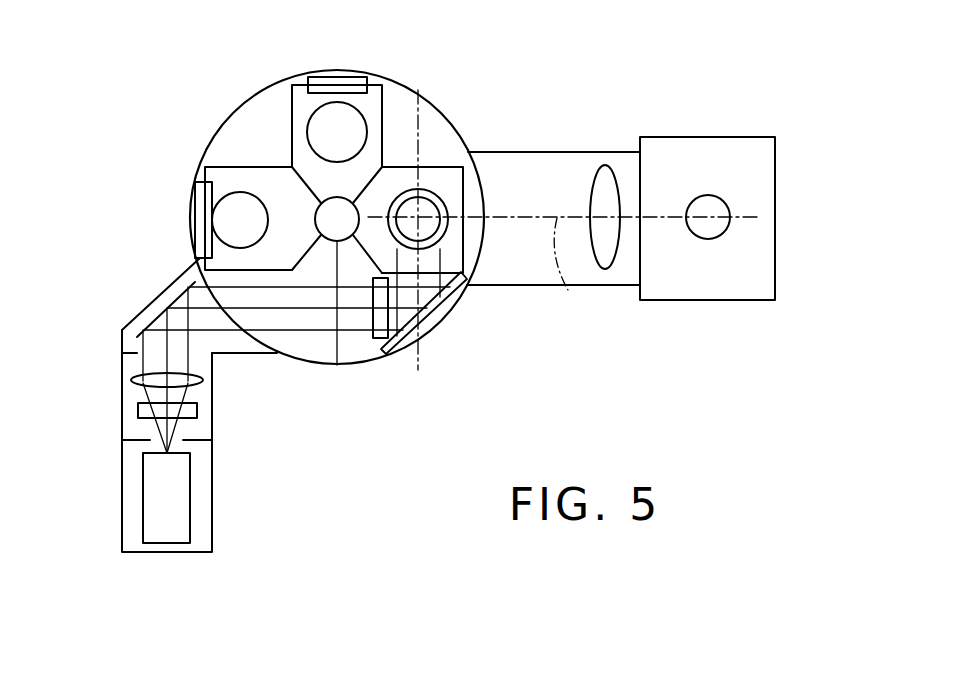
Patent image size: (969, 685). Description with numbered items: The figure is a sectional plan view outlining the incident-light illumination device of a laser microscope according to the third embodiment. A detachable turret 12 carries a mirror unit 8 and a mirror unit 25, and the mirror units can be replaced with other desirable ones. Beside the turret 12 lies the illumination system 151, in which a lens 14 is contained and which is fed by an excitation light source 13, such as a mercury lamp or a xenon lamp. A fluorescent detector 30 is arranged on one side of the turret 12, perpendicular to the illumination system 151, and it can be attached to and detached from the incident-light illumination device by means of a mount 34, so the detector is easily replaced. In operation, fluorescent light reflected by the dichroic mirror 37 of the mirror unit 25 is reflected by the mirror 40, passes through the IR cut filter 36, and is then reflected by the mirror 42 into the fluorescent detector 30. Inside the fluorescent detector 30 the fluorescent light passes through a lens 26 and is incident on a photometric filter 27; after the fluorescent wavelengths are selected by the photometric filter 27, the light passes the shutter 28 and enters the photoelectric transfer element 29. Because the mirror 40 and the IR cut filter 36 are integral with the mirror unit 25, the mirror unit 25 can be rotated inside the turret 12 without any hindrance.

The turret 12 is at (220, 123).
The mirror unit 8 is at (389, 120).
The dichroic mirror 37 is at (428, 207).
The illumination system 151 is at (562, 273).
The lens 14 is at (605, 267).
The excitation light source 13 is at (718, 235).
The mirror unit 25 is at (456, 244).
The mirror 40 is at (415, 320).
The IR cut filter 36 is at (377, 340).
The mirror 42 is at (153, 317).
The mount 34 is at (235, 348).
The fluorescent detector 30 is at (119, 495).
The lens 26 is at (203, 383).
The photometric filter 27 is at (197, 413).
The shutter 28 is at (193, 442).
The photoelectric transfer element 29 is at (163, 535).